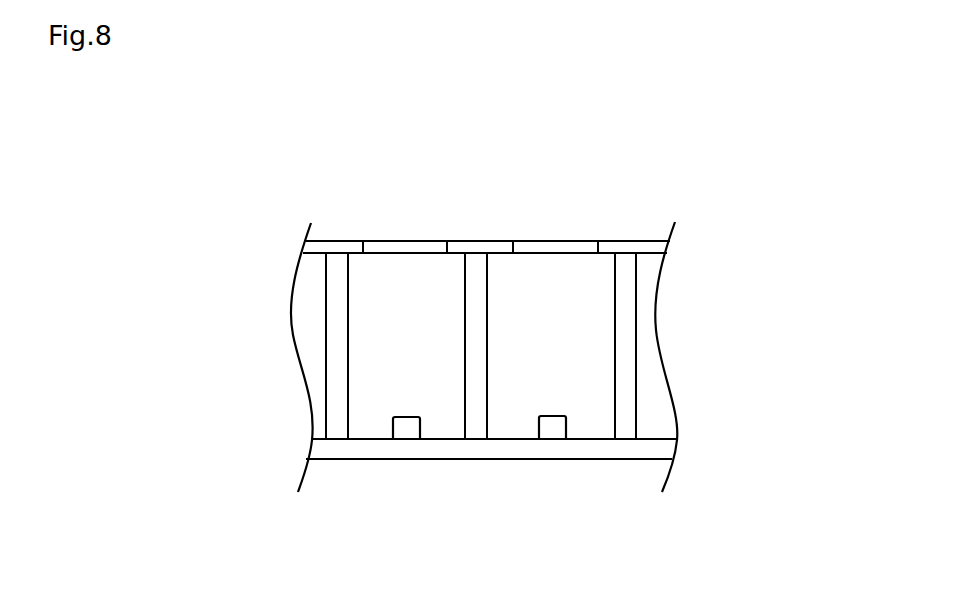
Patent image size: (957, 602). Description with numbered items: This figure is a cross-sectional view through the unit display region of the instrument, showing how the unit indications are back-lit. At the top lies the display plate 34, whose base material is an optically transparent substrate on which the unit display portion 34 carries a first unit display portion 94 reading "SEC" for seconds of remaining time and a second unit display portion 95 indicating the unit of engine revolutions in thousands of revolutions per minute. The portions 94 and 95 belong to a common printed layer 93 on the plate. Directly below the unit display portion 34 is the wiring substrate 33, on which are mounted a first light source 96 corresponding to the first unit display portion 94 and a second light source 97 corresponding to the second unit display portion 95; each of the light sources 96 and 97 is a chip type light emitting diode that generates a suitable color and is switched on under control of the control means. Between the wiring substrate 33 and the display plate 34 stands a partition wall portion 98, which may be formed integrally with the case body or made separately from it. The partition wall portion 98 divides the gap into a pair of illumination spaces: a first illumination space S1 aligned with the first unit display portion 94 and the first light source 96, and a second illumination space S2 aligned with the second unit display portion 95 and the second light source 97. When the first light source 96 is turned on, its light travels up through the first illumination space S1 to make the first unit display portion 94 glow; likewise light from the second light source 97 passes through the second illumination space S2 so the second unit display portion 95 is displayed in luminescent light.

The wiring substrate 33 is at (662, 447).
The display plate 34 is at (493, 189).
The partition plate 93 is at (467, 189).
The first unit display portion 94 is at (387, 248).
The second unit display portion 95 is at (563, 250).
The first light source 96 is at (408, 433).
The second light source 97 is at (553, 433).
The partition wall portion 98 is at (340, 294).
The first illumination space S1 is at (363, 343).
The second illumination space S2 is at (587, 335).